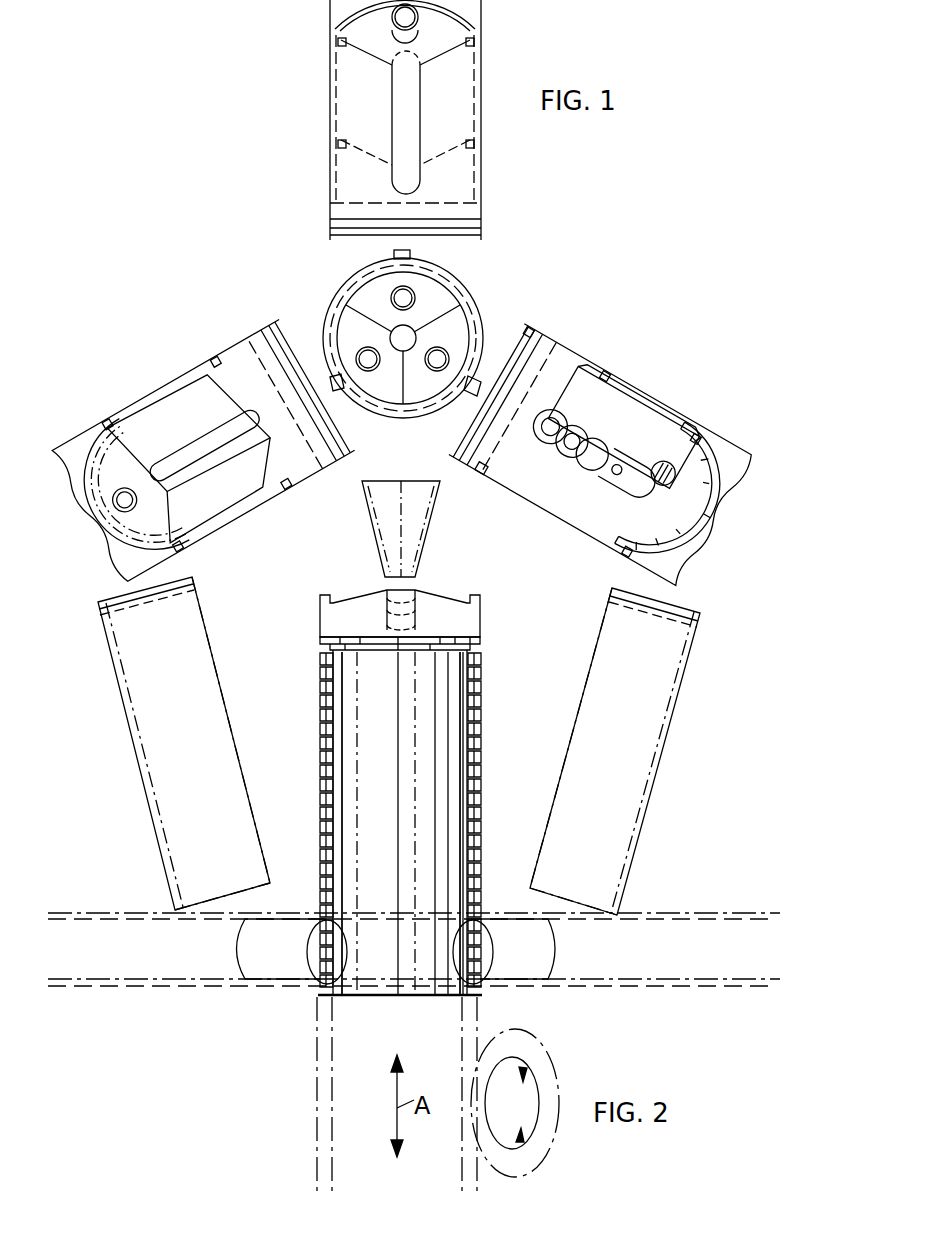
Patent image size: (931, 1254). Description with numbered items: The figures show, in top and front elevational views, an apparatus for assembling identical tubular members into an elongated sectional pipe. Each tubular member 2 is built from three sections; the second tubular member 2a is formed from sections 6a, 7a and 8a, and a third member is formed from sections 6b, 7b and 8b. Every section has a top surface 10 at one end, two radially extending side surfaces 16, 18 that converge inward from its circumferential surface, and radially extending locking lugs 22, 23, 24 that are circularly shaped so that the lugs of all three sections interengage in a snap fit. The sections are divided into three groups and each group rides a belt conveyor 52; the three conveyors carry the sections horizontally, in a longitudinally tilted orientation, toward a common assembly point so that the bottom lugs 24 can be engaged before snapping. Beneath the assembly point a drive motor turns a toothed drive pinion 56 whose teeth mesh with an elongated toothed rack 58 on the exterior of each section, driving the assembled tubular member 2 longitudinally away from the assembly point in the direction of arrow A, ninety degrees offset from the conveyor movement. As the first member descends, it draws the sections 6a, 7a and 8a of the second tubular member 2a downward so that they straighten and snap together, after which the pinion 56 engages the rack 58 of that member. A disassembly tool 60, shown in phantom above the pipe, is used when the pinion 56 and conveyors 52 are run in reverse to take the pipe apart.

In FIG. 2, the tubular member 2 is at (330, 1075).
In FIG. 1, the second tubular member 2a is at (415, 329).
In FIG. 2, the second tubular member 2a is at (401, 792).
In FIG. 1, the section 6a is at (350, 318).
In FIG. 2, the section 6a is at (354, 781).
In FIG. 1, the section 6b is at (148, 412).
In FIG. 2, the section 6b is at (207, 662).
In FIG. 1, the section 7a is at (437, 298).
In FIG. 1, the section 7b is at (458, 82).
In FIG. 1, the section 8a is at (456, 336).
In FIG. 2, the section 8a is at (436, 786).
In FIG. 1, the section 8b is at (602, 456).
In FIG. 2, the section 8b is at (646, 743).
In FIG. 1, the top surface 10 is at (677, 499).
In FIG. 1, the side surface 16 is at (625, 424).
In FIG. 1, the side surface 18 is at (481, 468).
In FIG. 1, the locking lug 22 is at (615, 467).
In FIG. 1, the locking lug 23 is at (572, 441).
In FIG. 1, the bottom locking lug 24 is at (550, 426).
In FIG. 1, the belt conveyor 52 is at (470, 214).
In FIG. 2, the belt conveyor 52 is at (671, 917).
In FIG. 1, the toothed drive pinion 56 is at (483, 378).
In FIG. 2, the toothed drive pinion 56 is at (546, 1062).
In FIG. 1, the toothed rack 58 is at (393, 254).
In FIG. 2, the toothed rack 58 is at (324, 686).
In FIG. 2, the disassembly tool 60 is at (424, 553).